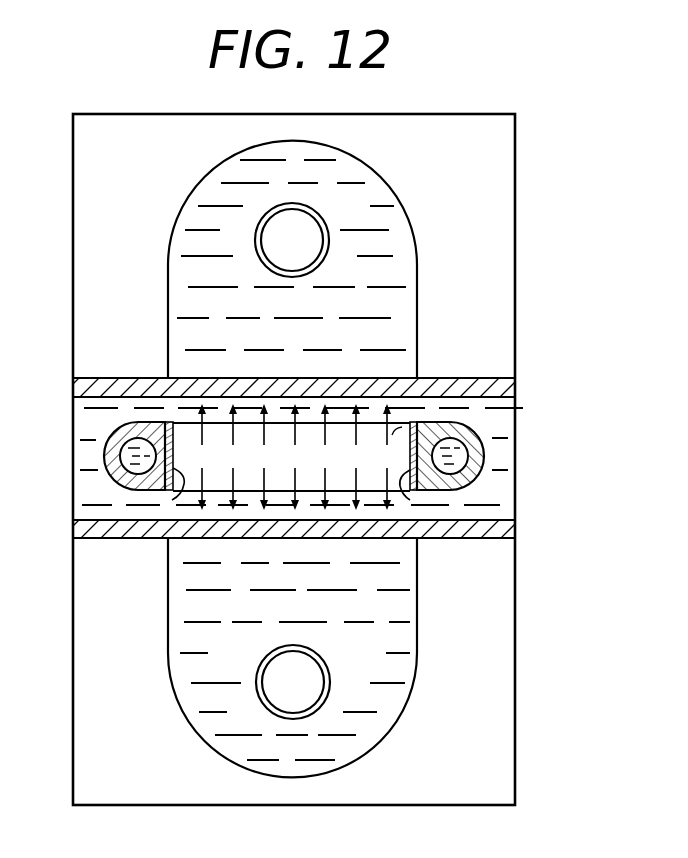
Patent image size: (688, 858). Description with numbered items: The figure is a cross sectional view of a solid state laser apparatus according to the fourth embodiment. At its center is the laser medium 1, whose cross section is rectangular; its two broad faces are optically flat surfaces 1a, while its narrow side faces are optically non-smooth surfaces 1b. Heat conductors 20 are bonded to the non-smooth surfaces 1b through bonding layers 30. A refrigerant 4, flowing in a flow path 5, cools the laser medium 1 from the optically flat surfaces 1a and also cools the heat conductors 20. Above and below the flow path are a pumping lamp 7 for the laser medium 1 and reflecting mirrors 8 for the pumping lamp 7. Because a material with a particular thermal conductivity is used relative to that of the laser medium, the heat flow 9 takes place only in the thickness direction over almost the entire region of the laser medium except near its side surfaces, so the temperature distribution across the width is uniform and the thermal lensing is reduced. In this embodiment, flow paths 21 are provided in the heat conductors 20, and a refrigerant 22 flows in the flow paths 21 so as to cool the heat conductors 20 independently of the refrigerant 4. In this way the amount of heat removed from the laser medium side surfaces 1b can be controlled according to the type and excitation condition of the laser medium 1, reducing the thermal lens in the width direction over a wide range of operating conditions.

The laser medium 1 is at (180, 428).
The optically flat surfaces 1a is at (338, 422).
The optically non-smooth surfaces 1b is at (172, 500).
The refrigerant 4 is at (150, 413).
The flow path 5 is at (190, 380).
The pumping lamp 7 is at (297, 228).
The reflecting mirrors 8 is at (207, 176).
The heat flow 9 is at (437, 424).
The heat conductors 20 is at (297, 491).
The flow paths 21 is at (468, 425).
The refrigerant 22 is at (467, 455).
The bonding layers 30 is at (169, 491).